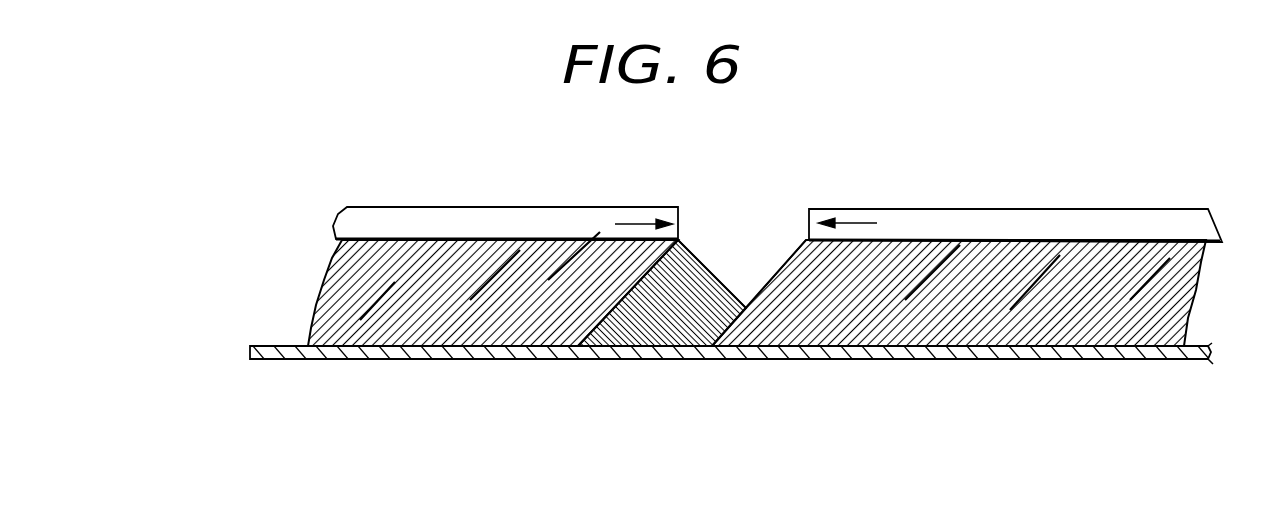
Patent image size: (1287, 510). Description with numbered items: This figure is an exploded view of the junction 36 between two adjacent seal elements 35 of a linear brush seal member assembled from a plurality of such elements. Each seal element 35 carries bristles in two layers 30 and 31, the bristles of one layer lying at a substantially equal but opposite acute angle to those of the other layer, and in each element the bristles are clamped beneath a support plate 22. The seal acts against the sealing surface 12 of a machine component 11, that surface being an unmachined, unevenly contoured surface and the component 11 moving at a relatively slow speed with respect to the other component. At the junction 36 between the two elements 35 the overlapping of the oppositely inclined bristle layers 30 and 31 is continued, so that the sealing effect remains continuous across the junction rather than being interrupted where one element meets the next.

The machine component 11 is at (287, 361).
The sealing surface 12 is at (292, 345).
The support plate 22 is at (567, 218).
The bristle layer 30 is at (493, 305).
The bristle layer 31 is at (667, 310).
The seal element 35 is at (418, 298).
The junction 36 is at (748, 226).